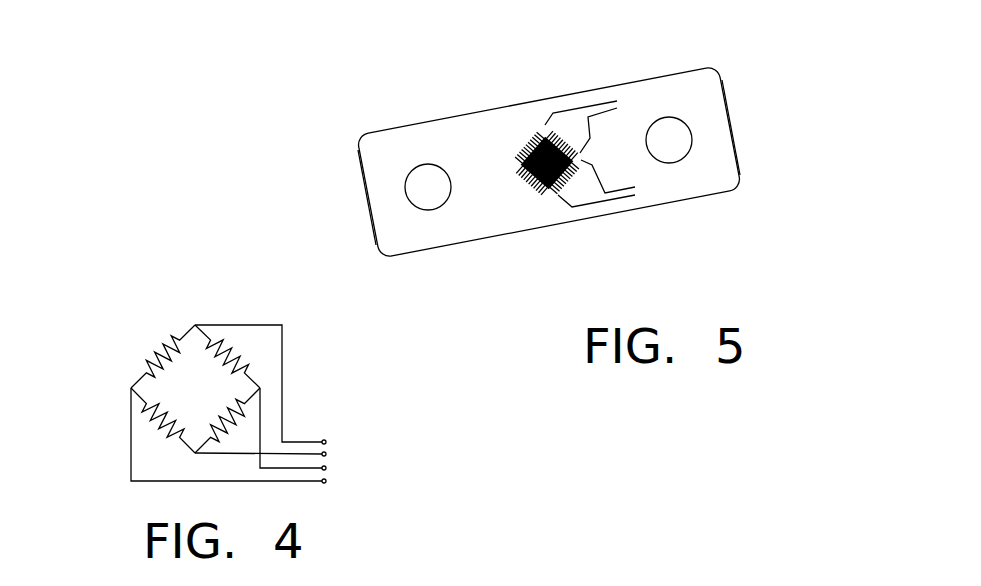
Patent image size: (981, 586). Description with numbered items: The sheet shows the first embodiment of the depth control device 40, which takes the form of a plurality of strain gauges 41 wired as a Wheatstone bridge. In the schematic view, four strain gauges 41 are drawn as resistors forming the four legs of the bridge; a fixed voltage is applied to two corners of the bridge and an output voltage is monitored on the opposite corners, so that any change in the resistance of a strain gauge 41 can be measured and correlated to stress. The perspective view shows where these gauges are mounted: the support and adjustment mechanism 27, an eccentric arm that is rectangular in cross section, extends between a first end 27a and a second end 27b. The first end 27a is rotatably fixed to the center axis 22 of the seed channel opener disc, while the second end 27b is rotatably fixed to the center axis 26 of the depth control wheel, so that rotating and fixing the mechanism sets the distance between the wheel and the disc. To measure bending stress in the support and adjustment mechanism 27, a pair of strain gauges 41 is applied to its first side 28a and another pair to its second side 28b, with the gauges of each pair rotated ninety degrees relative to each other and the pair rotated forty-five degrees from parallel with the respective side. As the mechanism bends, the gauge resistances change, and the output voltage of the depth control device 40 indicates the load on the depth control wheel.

In FIG. 4, the depth control device 40 is at (103, 343).
In FIG. 5, the depth control device 40 is at (380, 80).
In FIG. 4, the strain gauge 41 is at (202, 392).
In FIG. 5, the strain gauge 41 is at (512, 167).
In FIG. 5, the center axis of the disc 22 is at (407, 172).
In FIG. 5, the center axis of the depth control wheel 26 is at (682, 117).
In FIG. 5, the support and adjustment mechanism 27 is at (667, 208).
In FIG. 5, the first end 27a is at (360, 200).
In FIG. 5, the second end 27b is at (735, 127).
In FIG. 5, the first side 28a is at (473, 217).
In FIG. 5, the second side 28b is at (412, 238).